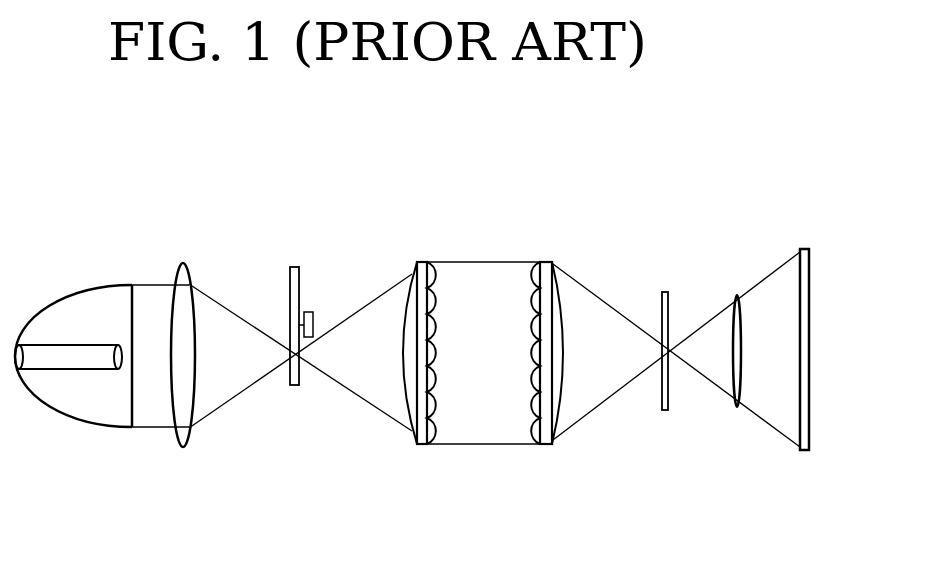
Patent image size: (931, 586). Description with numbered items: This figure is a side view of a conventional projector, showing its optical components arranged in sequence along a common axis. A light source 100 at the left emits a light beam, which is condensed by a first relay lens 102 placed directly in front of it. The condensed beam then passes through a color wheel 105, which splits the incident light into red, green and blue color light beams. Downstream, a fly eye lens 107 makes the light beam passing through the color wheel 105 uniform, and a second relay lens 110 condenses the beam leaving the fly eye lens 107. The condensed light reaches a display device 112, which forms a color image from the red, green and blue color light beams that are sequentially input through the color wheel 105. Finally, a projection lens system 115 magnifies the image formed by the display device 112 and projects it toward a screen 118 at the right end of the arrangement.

The light source 100 is at (87, 288).
The first relay lens 102 is at (184, 260).
The color wheel 105 is at (294, 263).
The fly eye lens 107 is at (422, 258).
The second relay lens 110 is at (546, 258).
The display device 112 is at (665, 292).
The projection lens system 115 is at (738, 292).
The screen 118 is at (805, 248).